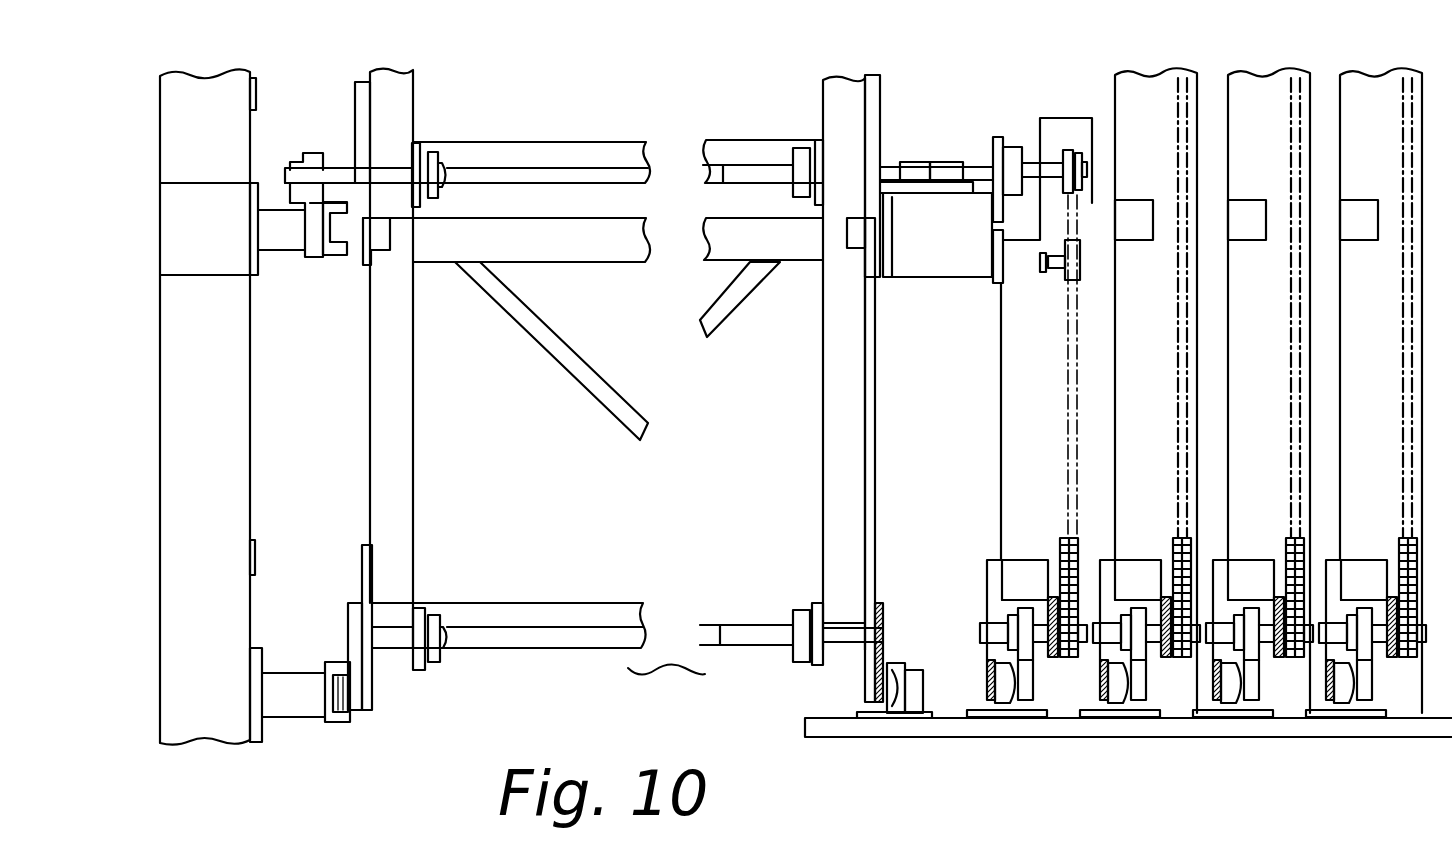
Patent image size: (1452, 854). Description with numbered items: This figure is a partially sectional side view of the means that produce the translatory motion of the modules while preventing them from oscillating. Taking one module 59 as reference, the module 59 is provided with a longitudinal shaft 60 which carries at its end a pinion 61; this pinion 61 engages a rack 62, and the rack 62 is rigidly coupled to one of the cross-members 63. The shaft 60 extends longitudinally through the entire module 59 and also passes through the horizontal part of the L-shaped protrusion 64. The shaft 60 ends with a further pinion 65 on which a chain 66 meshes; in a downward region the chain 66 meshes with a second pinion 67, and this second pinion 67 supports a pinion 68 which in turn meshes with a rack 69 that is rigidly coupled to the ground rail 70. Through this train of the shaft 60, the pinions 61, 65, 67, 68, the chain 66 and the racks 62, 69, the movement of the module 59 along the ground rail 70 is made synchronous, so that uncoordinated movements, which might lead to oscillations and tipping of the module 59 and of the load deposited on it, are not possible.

The module 59 is at (573, 150).
The longitudinal shaft 60 is at (468, 172).
The pinion 61 is at (313, 145).
The rack 62 is at (318, 200).
The cross-member 63 is at (288, 243).
The L-shaped protrusion 64 is at (985, 300).
The pinion 65 is at (1075, 150).
The chain 66 is at (1060, 392).
The second pinion 67 is at (1183, 660).
The pinion 68 is at (1022, 567).
The rack 69 is at (1023, 622).
The ground rail 70 is at (1027, 700).